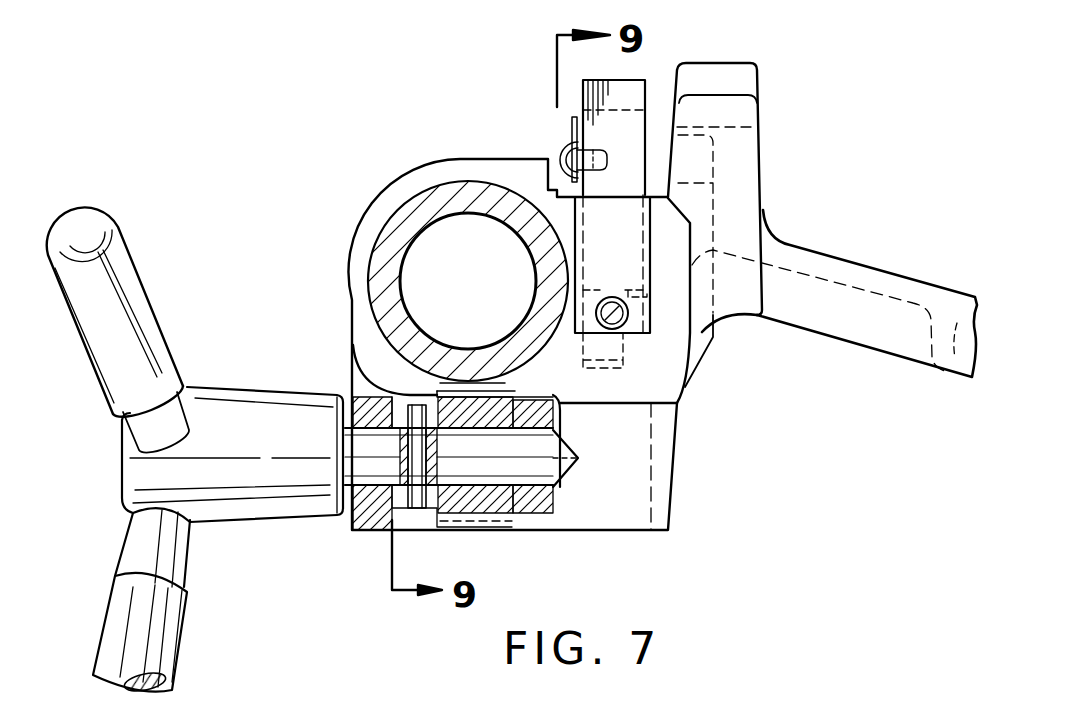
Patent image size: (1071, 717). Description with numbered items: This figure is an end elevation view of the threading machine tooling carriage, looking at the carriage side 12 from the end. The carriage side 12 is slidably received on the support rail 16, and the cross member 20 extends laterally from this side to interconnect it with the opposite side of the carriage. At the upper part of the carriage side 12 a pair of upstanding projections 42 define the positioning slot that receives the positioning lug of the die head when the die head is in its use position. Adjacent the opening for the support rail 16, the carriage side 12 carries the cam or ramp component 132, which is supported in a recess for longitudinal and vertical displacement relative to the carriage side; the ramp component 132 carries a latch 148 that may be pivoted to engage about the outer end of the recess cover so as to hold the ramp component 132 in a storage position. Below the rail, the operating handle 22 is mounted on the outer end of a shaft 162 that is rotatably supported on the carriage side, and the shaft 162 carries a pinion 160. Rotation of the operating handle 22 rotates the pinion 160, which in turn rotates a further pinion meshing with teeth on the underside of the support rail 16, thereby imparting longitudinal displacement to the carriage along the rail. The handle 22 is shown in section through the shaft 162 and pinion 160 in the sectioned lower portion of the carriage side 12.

The carriage side 12 is at (343, 233).
The support rail 16 is at (422, 210).
The cross member 20 is at (797, 255).
The operating handle 22 is at (158, 332).
The upstanding projections 42 is at (713, 163).
The ramp component 132 is at (625, 88).
The latch 148 is at (572, 122).
The pinion 160 is at (458, 503).
The shaft 162 is at (475, 470).